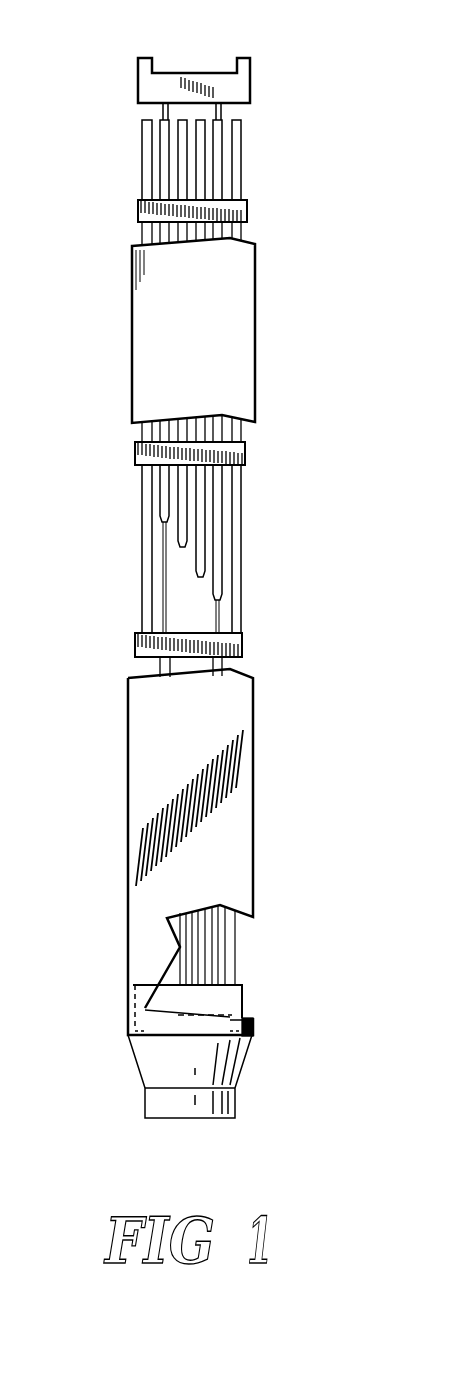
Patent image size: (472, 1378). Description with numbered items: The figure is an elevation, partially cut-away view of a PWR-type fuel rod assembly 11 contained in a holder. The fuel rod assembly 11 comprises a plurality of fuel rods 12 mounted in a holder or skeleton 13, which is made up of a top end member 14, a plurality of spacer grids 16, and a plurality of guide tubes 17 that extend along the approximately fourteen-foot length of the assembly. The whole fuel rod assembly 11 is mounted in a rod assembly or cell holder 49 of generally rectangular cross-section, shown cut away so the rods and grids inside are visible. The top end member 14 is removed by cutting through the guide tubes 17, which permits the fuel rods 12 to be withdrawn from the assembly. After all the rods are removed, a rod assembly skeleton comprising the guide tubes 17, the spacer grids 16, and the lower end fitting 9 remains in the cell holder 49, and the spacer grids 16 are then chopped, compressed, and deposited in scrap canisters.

The top end member 14 is at (243, 75).
The guide tubes 17 is at (163, 110).
The fuel rod assembly 11 is at (165, 168).
The spacer grids 16 is at (138, 211).
The fuel rods 12 is at (168, 506).
The holder or skeleton 13 is at (235, 628).
The rod assembly or cell holder 49 is at (230, 835).
The lower end fitting 9 is at (235, 995).